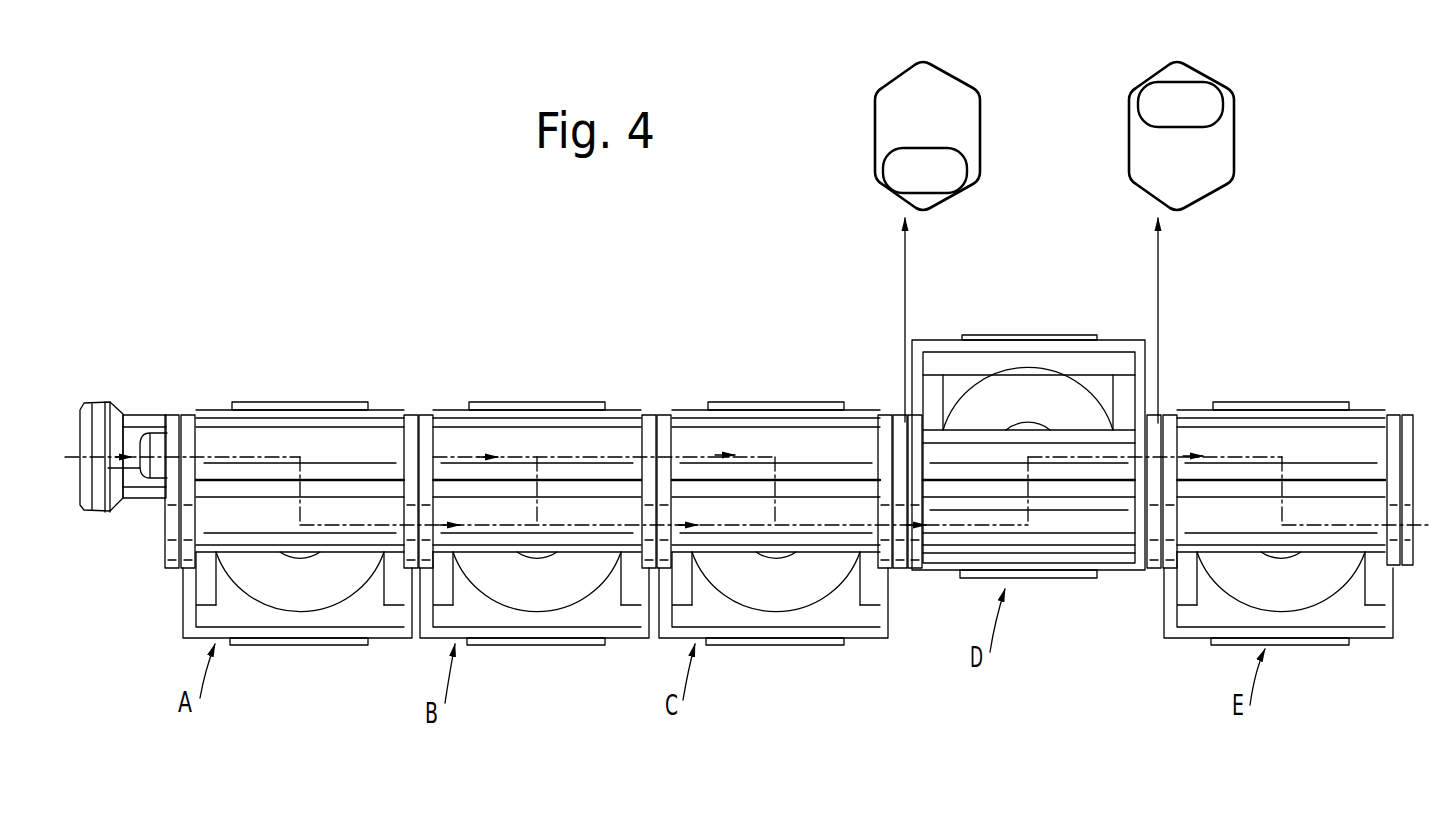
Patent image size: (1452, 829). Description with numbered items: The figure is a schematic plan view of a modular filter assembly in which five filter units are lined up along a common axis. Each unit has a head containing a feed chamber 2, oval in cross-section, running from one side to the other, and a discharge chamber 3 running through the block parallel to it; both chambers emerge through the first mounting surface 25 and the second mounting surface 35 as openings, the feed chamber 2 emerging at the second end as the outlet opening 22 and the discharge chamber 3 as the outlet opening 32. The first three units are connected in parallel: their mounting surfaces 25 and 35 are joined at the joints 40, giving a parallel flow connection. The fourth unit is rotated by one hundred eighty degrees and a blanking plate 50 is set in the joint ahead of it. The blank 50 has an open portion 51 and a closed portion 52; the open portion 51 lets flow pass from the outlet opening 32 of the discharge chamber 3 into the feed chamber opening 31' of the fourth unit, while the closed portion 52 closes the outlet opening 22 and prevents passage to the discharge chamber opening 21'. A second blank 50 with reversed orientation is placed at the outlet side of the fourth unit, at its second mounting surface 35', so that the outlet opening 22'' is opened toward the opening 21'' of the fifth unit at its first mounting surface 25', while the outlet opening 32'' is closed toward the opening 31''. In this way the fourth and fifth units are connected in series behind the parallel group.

The feed chamber 2 is at (255, 445).
The discharge chamber 3 is at (257, 523).
The joints 40 is at (418, 412).
The second mounting surface 35 is at (622, 462).
The first mounting surface 25 is at (686, 462).
The outlet opening 22 is at (789, 462).
The outlet opening 32 is at (773, 611).
The discharge chamber opening 21' is at (1028, 432).
The outlet opening 22'' is at (1029, 428).
The feed chamber opening 31' is at (933, 519).
The outlet opening 32'' is at (1046, 570).
The second mounting surface 35' is at (1131, 535).
The first mounting surface 25' is at (1191, 452).
The opening 21'' is at (1295, 463).
The opening 31'' is at (1278, 606).
The blanking plate 50 is at (871, 116).
The open portion 51 is at (893, 168).
The closed portion 52 is at (950, 100).